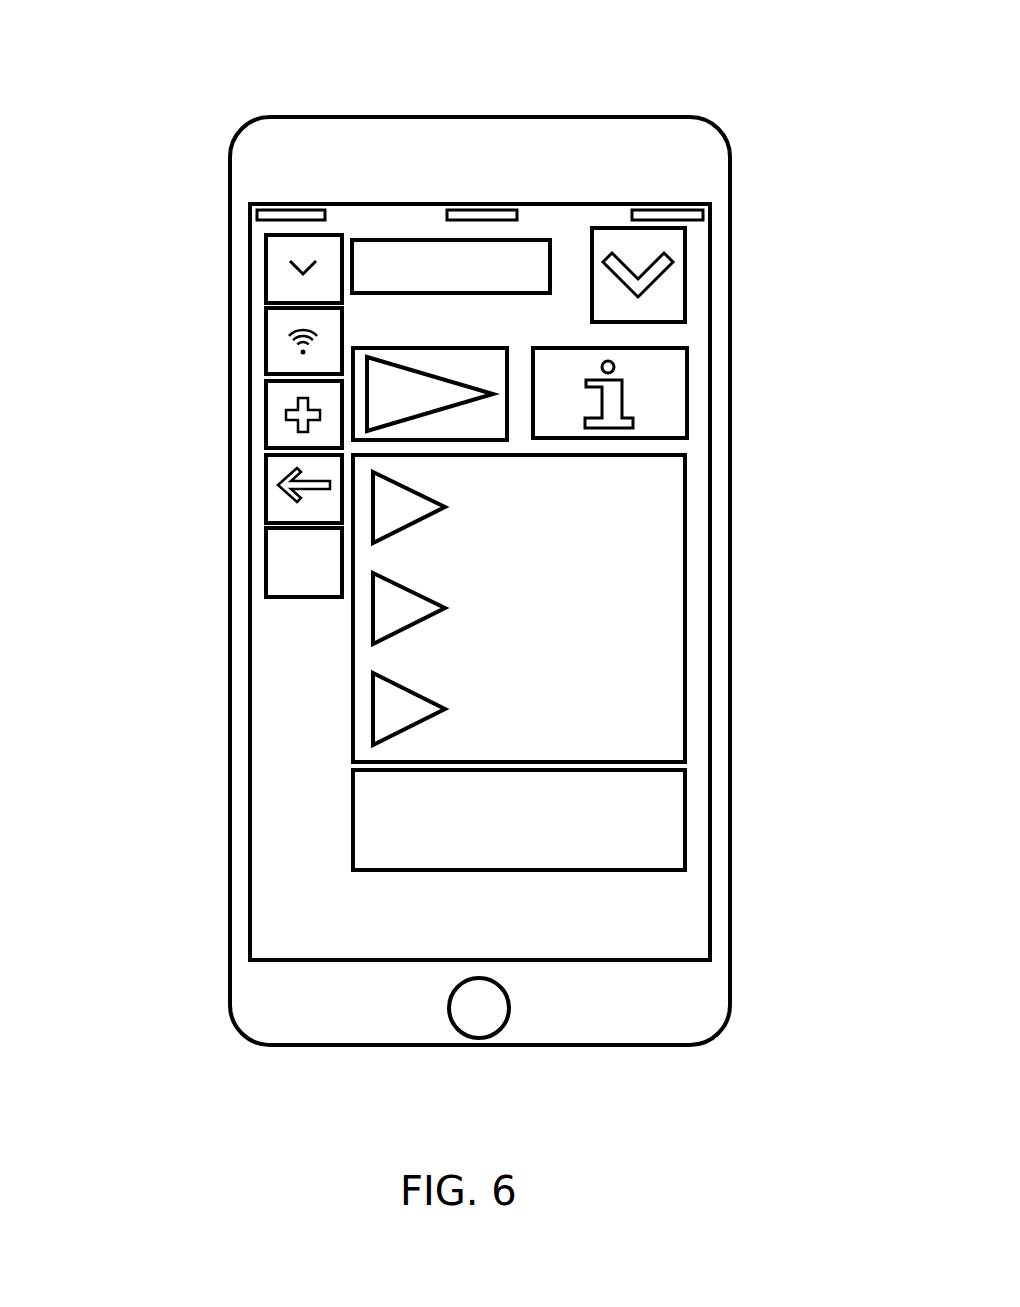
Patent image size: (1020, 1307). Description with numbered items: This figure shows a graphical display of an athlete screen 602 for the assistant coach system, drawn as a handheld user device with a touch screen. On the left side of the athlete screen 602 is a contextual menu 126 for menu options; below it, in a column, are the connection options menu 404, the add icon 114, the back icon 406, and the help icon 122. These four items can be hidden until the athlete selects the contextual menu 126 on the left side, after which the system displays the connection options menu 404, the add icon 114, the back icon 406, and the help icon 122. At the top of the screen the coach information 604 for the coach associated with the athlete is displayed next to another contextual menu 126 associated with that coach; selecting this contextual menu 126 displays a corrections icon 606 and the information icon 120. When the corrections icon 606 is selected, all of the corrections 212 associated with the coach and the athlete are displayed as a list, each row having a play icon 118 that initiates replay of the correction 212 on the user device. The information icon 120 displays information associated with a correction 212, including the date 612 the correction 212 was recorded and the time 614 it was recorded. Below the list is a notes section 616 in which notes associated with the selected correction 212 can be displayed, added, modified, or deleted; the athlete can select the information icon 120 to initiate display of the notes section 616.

The athlete screen 602 is at (118, 44).
The contextual menu 126 is at (278, 264).
The connection options menu 404 is at (278, 331).
The add icon 114 is at (278, 403).
The back icon 406 is at (278, 470).
The help icon 122 is at (293, 542).
The coach information 604 is at (525, 253).
The corrections icon 606 is at (480, 357).
The information icon 120 is at (638, 390).
The corrections 212 is at (557, 468).
The play icon 118 is at (402, 512).
The date 612 is at (549, 597).
The time 614 is at (653, 687).
The notes section 616 is at (645, 823).